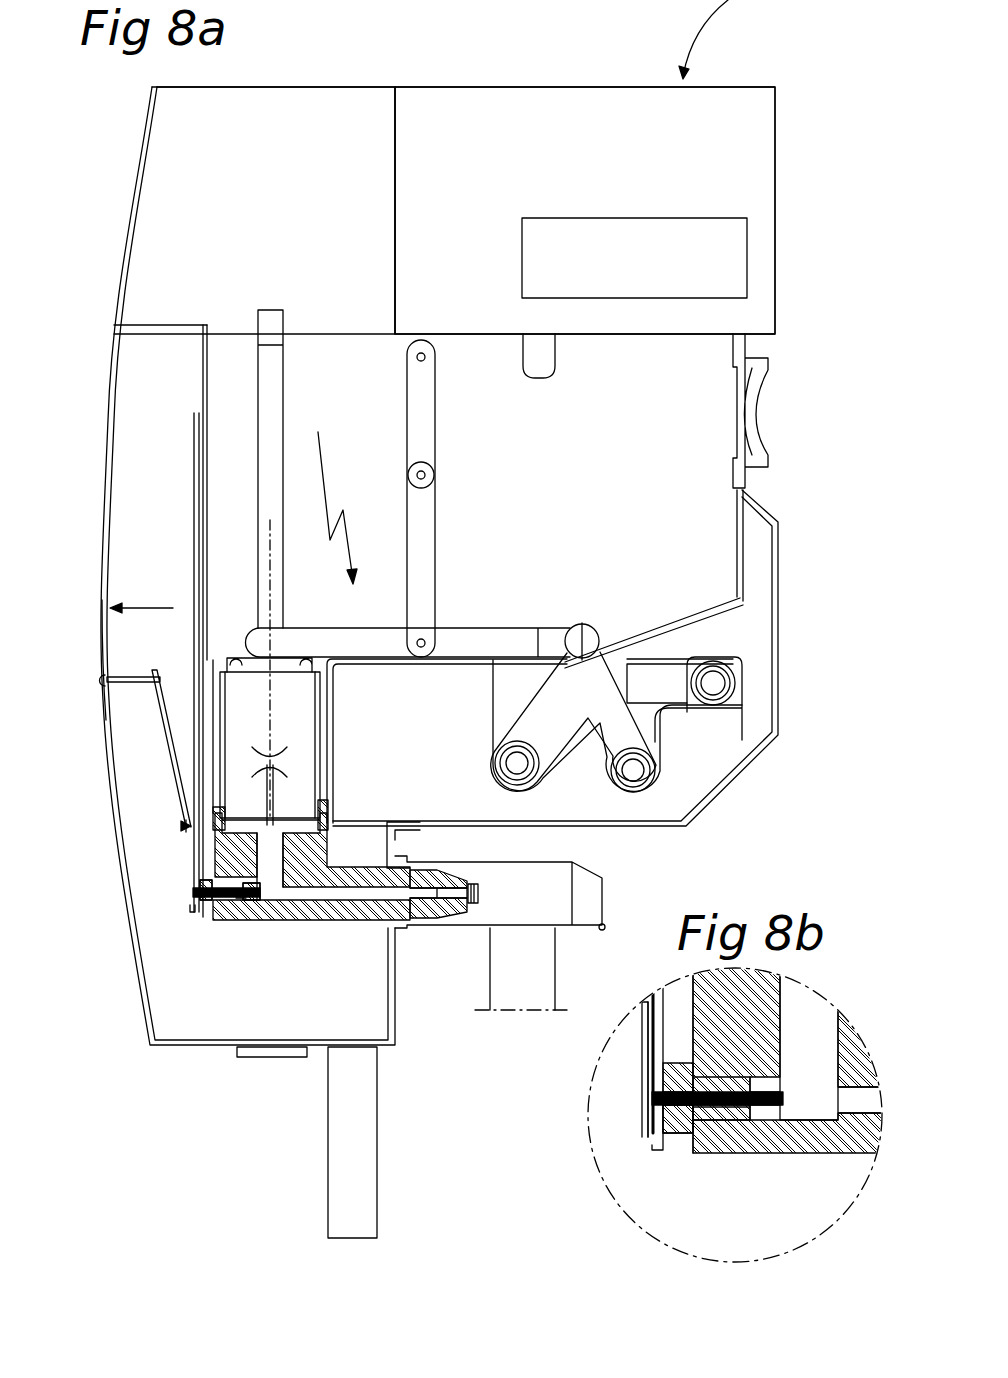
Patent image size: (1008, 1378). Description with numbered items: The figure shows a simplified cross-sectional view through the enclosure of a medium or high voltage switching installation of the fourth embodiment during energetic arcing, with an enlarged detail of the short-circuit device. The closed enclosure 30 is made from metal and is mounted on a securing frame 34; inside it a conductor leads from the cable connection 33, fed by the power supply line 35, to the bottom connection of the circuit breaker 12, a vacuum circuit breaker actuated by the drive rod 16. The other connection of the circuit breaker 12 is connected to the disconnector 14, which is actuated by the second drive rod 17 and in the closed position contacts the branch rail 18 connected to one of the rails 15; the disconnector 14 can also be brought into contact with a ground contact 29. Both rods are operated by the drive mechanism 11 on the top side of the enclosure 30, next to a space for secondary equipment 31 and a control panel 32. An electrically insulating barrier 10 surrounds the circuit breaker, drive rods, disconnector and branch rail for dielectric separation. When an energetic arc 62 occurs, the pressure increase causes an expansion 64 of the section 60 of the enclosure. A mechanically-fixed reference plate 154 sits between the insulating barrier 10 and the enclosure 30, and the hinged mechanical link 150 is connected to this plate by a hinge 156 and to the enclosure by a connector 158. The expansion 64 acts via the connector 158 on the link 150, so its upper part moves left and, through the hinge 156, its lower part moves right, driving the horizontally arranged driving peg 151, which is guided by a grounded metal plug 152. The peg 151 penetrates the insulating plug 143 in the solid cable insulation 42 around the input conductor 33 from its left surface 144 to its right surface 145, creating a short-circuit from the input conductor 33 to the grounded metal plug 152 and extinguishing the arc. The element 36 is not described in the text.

In FIG. 8A, the electrically insulating barrier 10 is at (200, 530).
In FIG. 8A, the drive mechanism 11 is at (193, 170).
In FIG. 8A, the circuit breaker 12 is at (240, 775).
In FIG. 8A, the disconnector 14 is at (513, 643).
In FIG. 8A, the rails 15 is at (722, 820).
In FIG. 8A, the drive rod 16 is at (263, 443).
In FIG. 8A, the second drive rod 17 is at (420, 517).
In FIG. 8A, the branch rail 18 is at (587, 688).
In FIG. 8A, the ground contact 29 is at (544, 364).
In FIG. 8A, the closed enclosure 30 is at (157, 279).
In FIG. 8A, the secondary equipment 31 is at (717, 258).
In FIG. 8A, the control panel 32 is at (733, 163).
In FIG. 8A, the cable connection 33 is at (371, 893).
In FIG. 8B, the cable connection 33 is at (812, 1050).
In FIG. 8A, the securing frame 34 is at (350, 1152).
In FIG. 8A, the power supply line 35 is at (480, 897).
In FIG. 8A, the leaf spring 36 is at (752, 382).
In FIG. 8A, the solid cable insulation 42 is at (348, 880).
In FIG. 8B, the solid cable insulation 42 is at (755, 1028).
In FIG. 8A, the section of the enclosure 60 is at (104, 643).
In FIG. 8A, the energetic arc 62 is at (325, 520).
In FIG. 8A, the expansion 64 is at (148, 608).
In FIG. 8A, the insulating plug 143 is at (252, 902).
In FIG. 8A, the left surface 144 is at (241, 900).
In FIG. 8A, the right surface 145 is at (256, 898).
In FIG. 8A, the hinged mechanical link 150 is at (190, 866).
In FIG. 8B, the hinged mechanical link 150 is at (650, 1075).
In FIG. 8A, the driving peg 151 is at (191, 906).
In FIG. 8B, the driving peg 151 is at (720, 1108).
In FIG. 8A, the metal plug 152 is at (207, 902).
In FIG. 8B, the metal plug 152 is at (683, 1123).
In FIG. 8A, the reference plate 154 is at (197, 582).
In FIG. 8B, the reference plate 154 is at (657, 1145).
In FIG. 8A, the hinge 156 is at (186, 826).
In FIG. 8A, the connector 158 is at (132, 681).